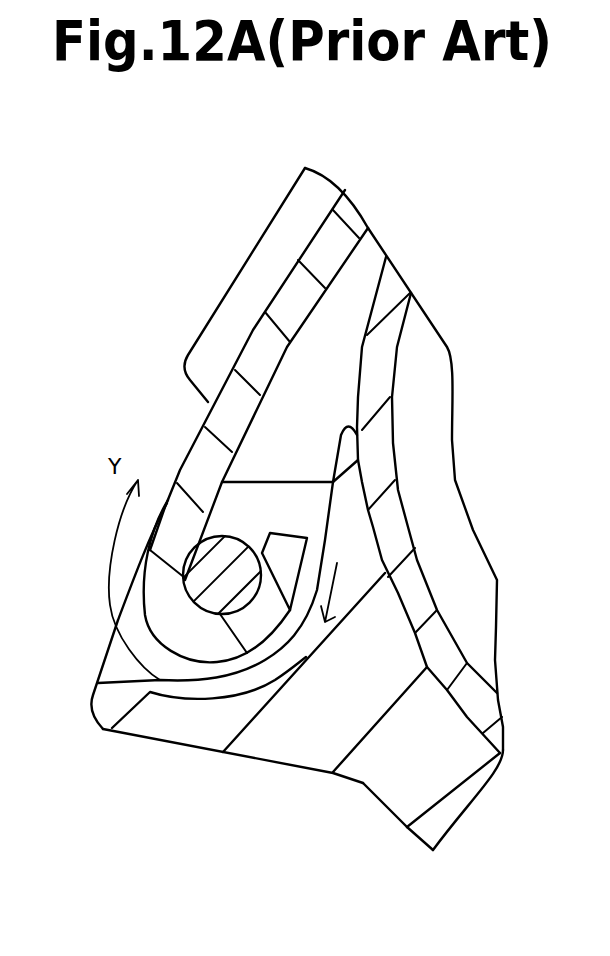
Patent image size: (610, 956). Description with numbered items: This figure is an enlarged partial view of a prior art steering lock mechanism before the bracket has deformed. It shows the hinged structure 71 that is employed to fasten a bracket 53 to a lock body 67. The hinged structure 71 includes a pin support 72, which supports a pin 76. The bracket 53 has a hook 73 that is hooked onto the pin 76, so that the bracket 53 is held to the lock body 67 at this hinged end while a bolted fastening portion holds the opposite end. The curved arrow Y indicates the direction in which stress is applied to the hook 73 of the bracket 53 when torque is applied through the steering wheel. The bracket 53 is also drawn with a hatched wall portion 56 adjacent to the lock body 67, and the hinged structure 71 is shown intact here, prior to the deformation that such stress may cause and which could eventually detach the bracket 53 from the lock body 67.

The bracket 53 is at (356, 212).
The side wall 56 is at (387, 287).
The lock body 67 is at (393, 838).
The hinged structure 71 is at (104, 753).
The pin support 72 is at (113, 650).
The hook 73 is at (193, 630).
The pin 76 is at (230, 550).